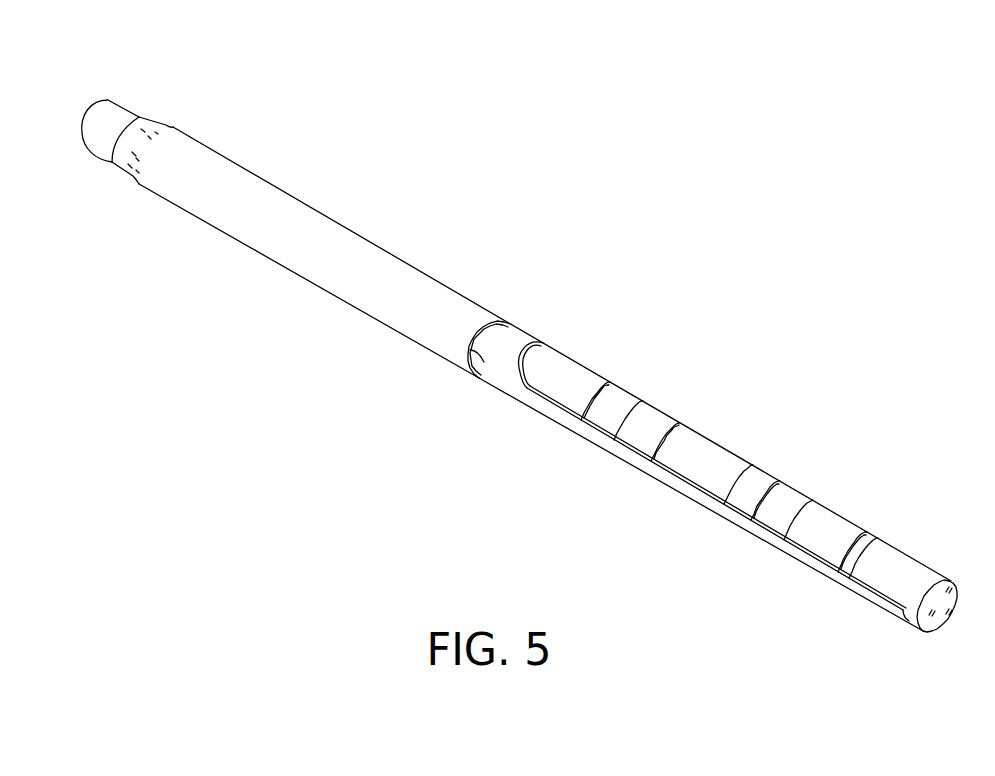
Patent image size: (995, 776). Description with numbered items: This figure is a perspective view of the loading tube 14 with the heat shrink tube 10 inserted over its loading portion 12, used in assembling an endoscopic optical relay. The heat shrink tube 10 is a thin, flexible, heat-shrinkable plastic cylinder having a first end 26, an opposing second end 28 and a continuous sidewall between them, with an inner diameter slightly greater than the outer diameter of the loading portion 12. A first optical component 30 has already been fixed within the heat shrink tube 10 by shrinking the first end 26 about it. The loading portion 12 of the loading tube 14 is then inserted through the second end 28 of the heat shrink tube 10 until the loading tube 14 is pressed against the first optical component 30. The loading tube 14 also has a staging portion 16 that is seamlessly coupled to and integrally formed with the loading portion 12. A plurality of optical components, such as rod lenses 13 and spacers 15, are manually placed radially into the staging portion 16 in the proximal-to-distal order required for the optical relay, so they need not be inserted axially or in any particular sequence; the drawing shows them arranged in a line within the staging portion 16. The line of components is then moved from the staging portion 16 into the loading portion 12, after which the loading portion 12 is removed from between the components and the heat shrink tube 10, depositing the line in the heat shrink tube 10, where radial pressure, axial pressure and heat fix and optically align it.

The heat shrink tube 10 is at (341, 207).
The loading portion 12 is at (527, 333).
The rod lenses 13 is at (600, 423).
The loading tube 14 is at (612, 482).
The spacers 15 is at (578, 373).
The staging portion 16 is at (802, 562).
The first end 26 is at (138, 116).
The second end 28 is at (484, 362).
The first optical component 30 is at (97, 142).